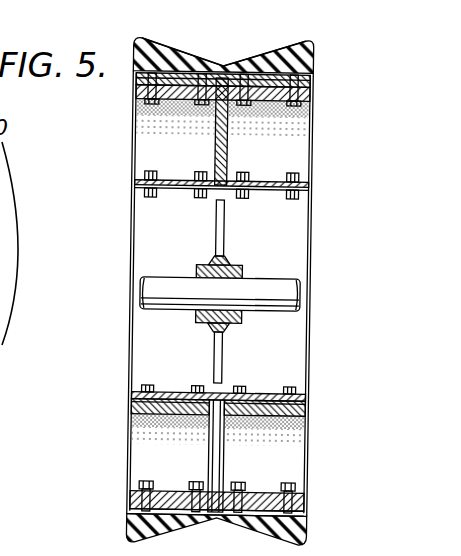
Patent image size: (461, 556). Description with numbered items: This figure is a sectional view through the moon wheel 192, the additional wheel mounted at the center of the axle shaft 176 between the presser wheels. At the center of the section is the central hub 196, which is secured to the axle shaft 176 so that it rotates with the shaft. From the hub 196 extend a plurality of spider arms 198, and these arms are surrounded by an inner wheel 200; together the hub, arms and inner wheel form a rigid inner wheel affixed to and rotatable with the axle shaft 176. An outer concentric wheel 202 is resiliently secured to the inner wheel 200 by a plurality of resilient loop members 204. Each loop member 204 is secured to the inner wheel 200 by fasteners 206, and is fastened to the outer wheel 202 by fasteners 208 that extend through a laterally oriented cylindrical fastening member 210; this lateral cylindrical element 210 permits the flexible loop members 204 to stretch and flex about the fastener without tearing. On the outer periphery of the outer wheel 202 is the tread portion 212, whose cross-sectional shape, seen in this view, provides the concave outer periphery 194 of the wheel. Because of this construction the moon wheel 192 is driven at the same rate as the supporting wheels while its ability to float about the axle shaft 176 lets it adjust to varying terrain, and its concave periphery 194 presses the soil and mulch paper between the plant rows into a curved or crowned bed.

The axle shaft 176 is at (301, 288).
The moon wheel 192 is at (5, 193).
The concave outer periphery 194 is at (261, 52).
The central hub 196 is at (197, 270).
The spider arms 198 is at (215, 223).
The inner wheel 200 is at (269, 189).
The outer concentric wheel 202 is at (310, 78).
The resilient loop members 204 is at (135, 79).
The fasteners 206 is at (147, 175).
The fasteners 208 is at (145, 104).
The cylindrical fastening member 210 is at (260, 100).
The tread portion 212 is at (174, 60).